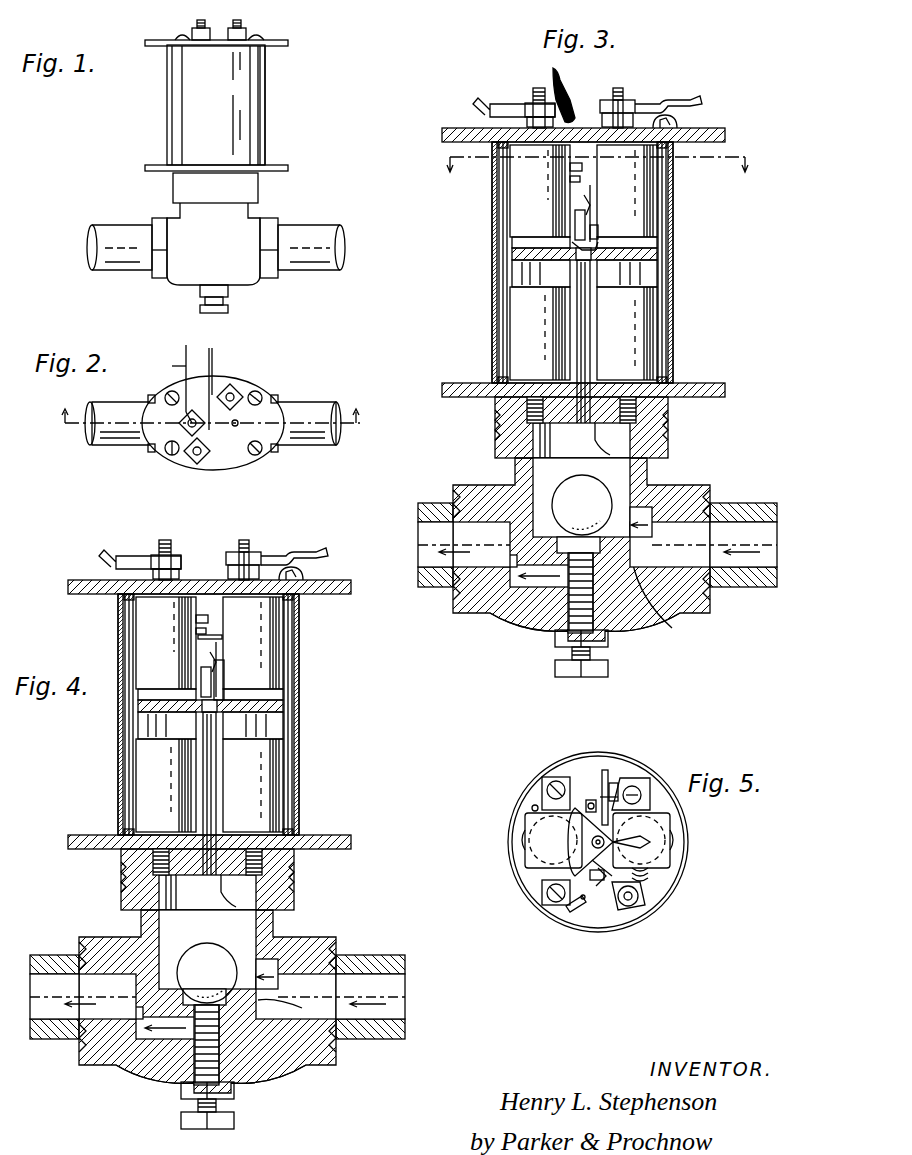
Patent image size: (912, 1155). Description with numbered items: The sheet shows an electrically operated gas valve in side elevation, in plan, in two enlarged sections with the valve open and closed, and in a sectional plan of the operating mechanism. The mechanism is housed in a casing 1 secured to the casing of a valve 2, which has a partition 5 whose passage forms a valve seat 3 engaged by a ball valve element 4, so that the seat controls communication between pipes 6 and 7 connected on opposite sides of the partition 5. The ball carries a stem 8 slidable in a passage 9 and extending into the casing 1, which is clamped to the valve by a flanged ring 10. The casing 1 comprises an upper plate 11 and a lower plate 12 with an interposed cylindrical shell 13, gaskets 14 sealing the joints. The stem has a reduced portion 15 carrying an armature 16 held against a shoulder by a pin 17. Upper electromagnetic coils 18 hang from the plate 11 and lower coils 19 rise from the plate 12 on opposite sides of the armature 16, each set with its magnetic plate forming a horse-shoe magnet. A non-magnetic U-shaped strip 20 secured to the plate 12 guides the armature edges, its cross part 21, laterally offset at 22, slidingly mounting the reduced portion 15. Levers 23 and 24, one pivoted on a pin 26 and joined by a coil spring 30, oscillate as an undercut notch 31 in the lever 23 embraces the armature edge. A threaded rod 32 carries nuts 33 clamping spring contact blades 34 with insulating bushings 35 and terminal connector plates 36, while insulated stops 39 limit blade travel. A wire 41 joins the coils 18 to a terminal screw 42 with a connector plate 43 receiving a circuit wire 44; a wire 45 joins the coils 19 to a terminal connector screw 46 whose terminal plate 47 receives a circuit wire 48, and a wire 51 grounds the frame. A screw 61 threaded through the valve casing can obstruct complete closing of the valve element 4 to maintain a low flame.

In FIG. 1, the casing 1 is at (216, 105).
In FIG. 2, the casing 1 is at (268, 390).
In FIG. 3, the casing 1 is at (677, 255).
In FIG. 4, the casing 1 is at (224, 714).
In FIG. 5, the casing 1 is at (657, 793).
In FIG. 1, the valve 2 is at (215, 258).
In FIG. 3, the valve 2 is at (648, 480).
In FIG. 4, the valve 2 is at (207, 1001).
In FIG. 2, the valve seat 3 is at (210, 406).
In FIG. 3, the valve seat 3 is at (596, 560).
In FIG. 4, the valve seat 3 is at (210, 1067).
In FIG. 3, the valve element 4 is at (582, 505).
In FIG. 4, the valve element 4 is at (207, 973).
In FIG. 3, the partition 5 is at (597, 400).
In FIG. 4, the partition 5 is at (285, 1006).
In FIG. 1, the pipe 6 is at (311, 247).
In FIG. 2, the pipe 6 is at (306, 423).
In FIG. 3, the pipe 6 is at (752, 588).
In FIG. 4, the pipe 6 is at (341, 997).
In FIG. 1, the pipe 7 is at (119, 247).
In FIG. 2, the pipe 7 is at (120, 423).
In FIG. 3, the pipe 7 is at (428, 564).
In FIG. 4, the pipe 7 is at (83, 997).
In FIG. 3, the stem 8 is at (577, 306).
In FIG. 4, the stem 8 is at (197, 828).
In FIG. 3, the passage 9 is at (578, 440).
In FIG. 4, the passage 9 is at (204, 892).
In FIG. 1, the flanged ring 10 is at (215, 188).
In FIG. 3, the flanged ring 10 is at (668, 432).
In FIG. 4, the flanged ring 10 is at (231, 879).
In FIG. 1, the upper plate 11 is at (162, 47).
In FIG. 2, the upper plate 11 is at (220, 423).
In FIG. 3, the upper plate 11 is at (722, 136).
In FIG. 4, the upper plate 11 is at (209, 577).
In FIG. 1, the lower plate 12 is at (156, 164).
In FIG. 3, the lower plate 12 is at (712, 383).
In FIG. 4, the lower plate 12 is at (209, 852).
In FIG. 1, the shell 13 is at (266, 113).
In FIG. 3, the shell 13 is at (492, 234).
In FIG. 4, the shell 13 is at (231, 714).
In FIG. 5, the shell 13 is at (584, 756).
In FIG. 1, the gaskets 14 is at (265, 47).
In FIG. 3, the gaskets 14 is at (497, 146).
In FIG. 4, the gaskets 14 is at (235, 714).
In FIG. 3, the reduced portion 15 is at (597, 244).
In FIG. 4, the reduced portion 15 is at (234, 680).
In FIG. 3, the armature 16 is at (512, 255).
In FIG. 4, the armature 16 is at (186, 715).
In FIG. 5, the armature 16 is at (655, 858).
In FIG. 3, the pin 17 is at (574, 242).
In FIG. 4, the pin 17 is at (181, 682).
In FIG. 5, the pin 17 is at (605, 842).
In FIG. 3, the electromagnetic coils 18 is at (510, 204).
In FIG. 4, the electromagnetic coils 18 is at (209, 648).
In FIG. 3, the coils 19 is at (520, 340).
In FIG. 4, the coils 19 is at (209, 785).
In FIG. 5, the coils 19 is at (526, 851).
In FIG. 3, the strip 20 is at (640, 277).
In FIG. 4, the strip 20 is at (236, 718).
In FIG. 5, the strip 20 is at (542, 790).
In FIG. 3, the cross part 21 is at (597, 233).
In FIG. 5, the cross part 21 is at (632, 850).
In FIG. 5, the lateral offset 22 is at (580, 825).
In FIG. 5, the lever 23 is at (606, 770).
In FIG. 5, the lever 24 is at (616, 784).
In FIG. 5, the pin 26 is at (642, 783).
In FIG. 5, the coil spring 30 is at (584, 800).
In FIG. 5, the undercut notch 31 is at (590, 862).
In FIG. 5, the rod 32 is at (632, 905).
In FIG. 3, the nuts 33 is at (583, 171).
In FIG. 4, the nuts 33 is at (228, 615).
In FIG. 5, the nuts 33 is at (640, 900).
In FIG. 3, the spring contact blades 34 is at (582, 232).
In FIG. 4, the spring contact blades 34 is at (182, 669).
In FIG. 5, the spring contact blades 34 is at (600, 890).
In FIG. 4, the insulating washers and bushings 35 is at (228, 629).
In FIG. 5, the terminal connector plate 36 is at (566, 908).
In FIG. 5, the insulated stops 39 is at (651, 883).
In FIG. 5, the wire 41 is at (580, 908).
In FIG. 1, the terminal screw 42 is at (244, 26).
In FIG. 2, the terminal screw 42 is at (242, 392).
In FIG. 3, the terminal screw 42 is at (624, 98).
In FIG. 4, the terminal screw 42 is at (255, 549).
In FIG. 1, the connector plate 43 is at (262, 35).
In FIG. 3, the connector plate 43 is at (676, 122).
In FIG. 4, the connector plate 43 is at (295, 556).
In FIG. 2, the circuit wire 44 is at (213, 352).
In FIG. 3, the circuit wire 44 is at (695, 106).
In FIG. 4, the circuit wire 44 is at (232, 560).
In FIG. 5, the wire 45 is at (532, 809).
In FIG. 1, the terminal connector screw 46 is at (195, 25).
In FIG. 2, the terminal connector screw 46 is at (197, 465).
In FIG. 1, the terminal plate 47 is at (206, 26).
In FIG. 2, the circuit wire 48 is at (207, 352).
In FIG. 2, the wire 51 is at (168, 364).
In FIG. 3, the screw 61 is at (552, 622).
In FIG. 4, the screw 61 is at (211, 1079).